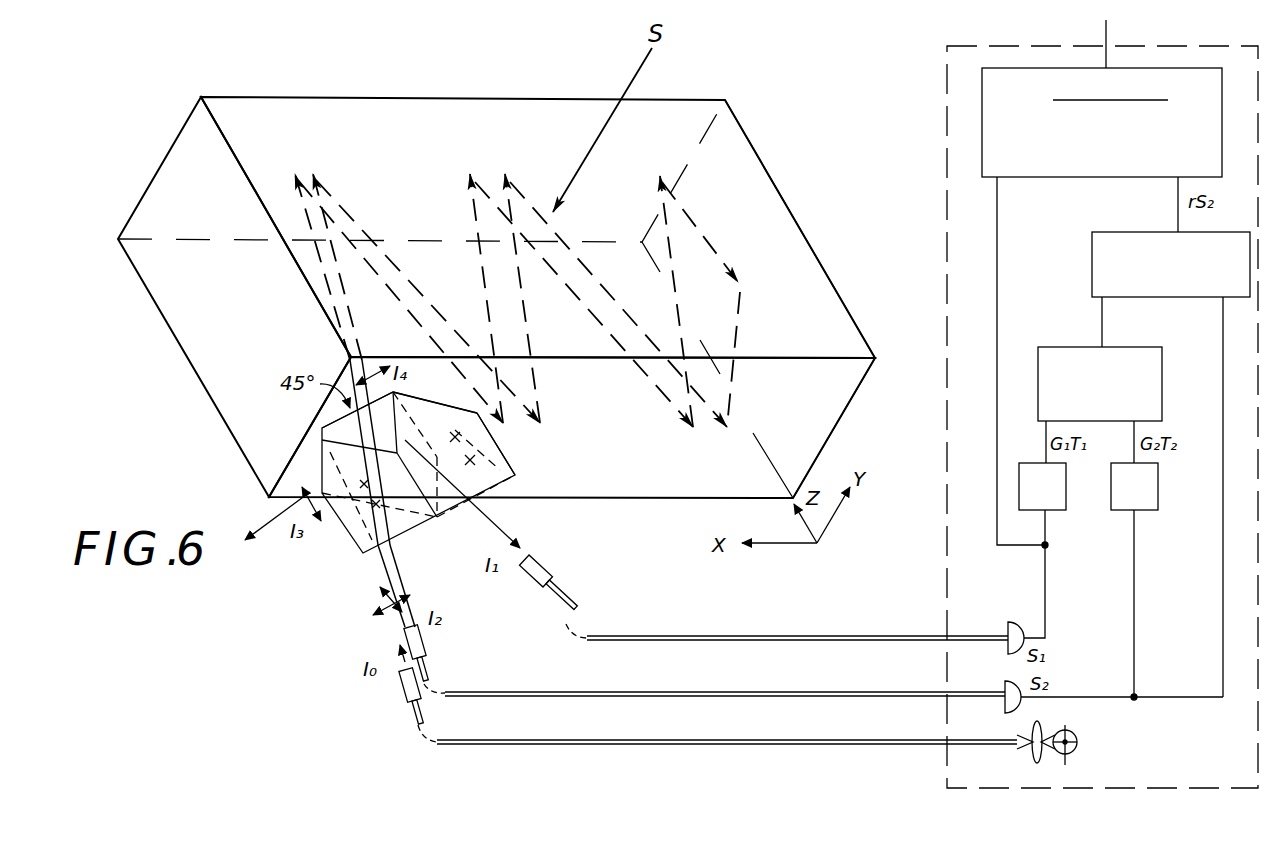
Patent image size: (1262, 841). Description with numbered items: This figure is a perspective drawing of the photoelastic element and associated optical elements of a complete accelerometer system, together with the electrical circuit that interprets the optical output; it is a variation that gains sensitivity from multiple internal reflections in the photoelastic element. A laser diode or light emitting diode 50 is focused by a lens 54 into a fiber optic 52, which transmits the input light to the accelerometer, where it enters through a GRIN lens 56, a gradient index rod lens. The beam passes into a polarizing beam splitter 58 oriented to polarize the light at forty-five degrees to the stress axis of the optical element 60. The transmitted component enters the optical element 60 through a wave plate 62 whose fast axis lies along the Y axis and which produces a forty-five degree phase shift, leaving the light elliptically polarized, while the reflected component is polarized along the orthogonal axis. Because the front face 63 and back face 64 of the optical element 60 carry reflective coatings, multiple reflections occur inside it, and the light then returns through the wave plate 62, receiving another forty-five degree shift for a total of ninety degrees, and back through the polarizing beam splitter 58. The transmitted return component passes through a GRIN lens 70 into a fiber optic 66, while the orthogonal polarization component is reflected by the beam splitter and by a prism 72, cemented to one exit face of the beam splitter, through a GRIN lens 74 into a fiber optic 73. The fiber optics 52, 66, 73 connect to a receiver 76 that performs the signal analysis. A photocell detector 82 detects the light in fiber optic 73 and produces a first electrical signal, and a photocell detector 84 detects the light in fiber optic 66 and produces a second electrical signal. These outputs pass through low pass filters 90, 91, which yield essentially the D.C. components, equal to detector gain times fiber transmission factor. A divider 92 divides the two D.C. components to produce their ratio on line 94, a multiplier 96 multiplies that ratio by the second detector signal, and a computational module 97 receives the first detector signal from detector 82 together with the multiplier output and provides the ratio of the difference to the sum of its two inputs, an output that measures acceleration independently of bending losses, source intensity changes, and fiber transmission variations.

The laser diode or light emitting diode 50 is at (1078, 740).
The fiber optic 52 is at (885, 740).
The lens 54 is at (1040, 724).
The GRIN lens 56 is at (400, 690).
The polarizing beam splitter 58 is at (350, 546).
The optical element 60 is at (764, 166).
The wave plate 62 is at (403, 392).
The front face 63 is at (855, 348).
The back face 64 is at (178, 130).
The fiber optic 66 is at (890, 692).
The GRIN lens 70 is at (425, 644).
The prism 72 is at (512, 476).
The fiber optic 73 is at (890, 624).
The GRIN lens 74 is at (550, 568).
The receiver 76 is at (950, 72).
The photocell detector 82 is at (1006, 626).
The photocell detector 84 is at (1004, 690).
The low pass filter 90 is at (1058, 514).
The low pass filter 91 is at (1145, 512).
The divider 92 is at (1163, 370).
The line 94 is at (1100, 322).
The multiplier 96 is at (1126, 232).
The computational module 97 is at (1222, 140).